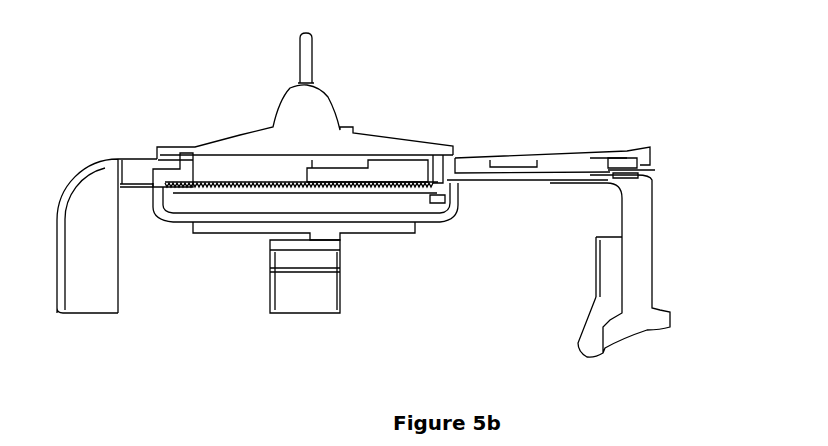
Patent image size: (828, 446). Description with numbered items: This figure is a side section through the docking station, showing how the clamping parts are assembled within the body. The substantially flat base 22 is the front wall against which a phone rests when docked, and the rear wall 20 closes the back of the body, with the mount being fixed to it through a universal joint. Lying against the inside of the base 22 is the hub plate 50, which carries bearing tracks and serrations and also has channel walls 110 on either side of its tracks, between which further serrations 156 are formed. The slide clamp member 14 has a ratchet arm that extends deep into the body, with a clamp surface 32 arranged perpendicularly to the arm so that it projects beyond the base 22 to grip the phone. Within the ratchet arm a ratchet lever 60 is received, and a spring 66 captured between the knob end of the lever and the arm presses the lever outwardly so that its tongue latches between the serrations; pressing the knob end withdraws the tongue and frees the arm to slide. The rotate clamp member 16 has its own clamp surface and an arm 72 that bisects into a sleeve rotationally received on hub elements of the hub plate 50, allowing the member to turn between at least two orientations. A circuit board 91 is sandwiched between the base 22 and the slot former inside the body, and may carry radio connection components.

The slide clamp member 14 is at (670, 332).
The rotate clamp member 16 is at (92, 315).
The rear wall 20 is at (377, 133).
The base 22 is at (412, 215).
The clamp surface 32 is at (597, 272).
The hub plate 50 is at (267, 192).
The ratchet lever 60 is at (633, 142).
The spring 66 is at (633, 170).
The arm 72 is at (133, 170).
The circuit board 91 is at (305, 200).
The channel walls 110 is at (272, 165).
The further serrations 156 is at (222, 185).